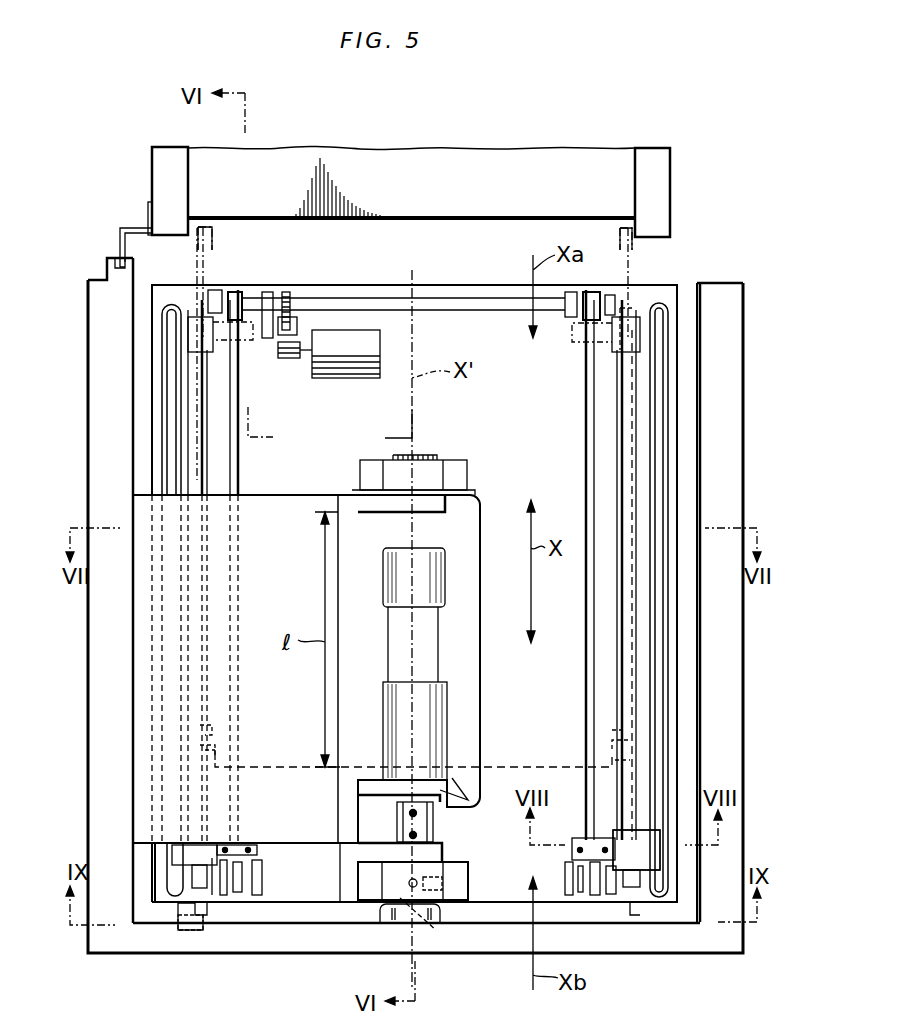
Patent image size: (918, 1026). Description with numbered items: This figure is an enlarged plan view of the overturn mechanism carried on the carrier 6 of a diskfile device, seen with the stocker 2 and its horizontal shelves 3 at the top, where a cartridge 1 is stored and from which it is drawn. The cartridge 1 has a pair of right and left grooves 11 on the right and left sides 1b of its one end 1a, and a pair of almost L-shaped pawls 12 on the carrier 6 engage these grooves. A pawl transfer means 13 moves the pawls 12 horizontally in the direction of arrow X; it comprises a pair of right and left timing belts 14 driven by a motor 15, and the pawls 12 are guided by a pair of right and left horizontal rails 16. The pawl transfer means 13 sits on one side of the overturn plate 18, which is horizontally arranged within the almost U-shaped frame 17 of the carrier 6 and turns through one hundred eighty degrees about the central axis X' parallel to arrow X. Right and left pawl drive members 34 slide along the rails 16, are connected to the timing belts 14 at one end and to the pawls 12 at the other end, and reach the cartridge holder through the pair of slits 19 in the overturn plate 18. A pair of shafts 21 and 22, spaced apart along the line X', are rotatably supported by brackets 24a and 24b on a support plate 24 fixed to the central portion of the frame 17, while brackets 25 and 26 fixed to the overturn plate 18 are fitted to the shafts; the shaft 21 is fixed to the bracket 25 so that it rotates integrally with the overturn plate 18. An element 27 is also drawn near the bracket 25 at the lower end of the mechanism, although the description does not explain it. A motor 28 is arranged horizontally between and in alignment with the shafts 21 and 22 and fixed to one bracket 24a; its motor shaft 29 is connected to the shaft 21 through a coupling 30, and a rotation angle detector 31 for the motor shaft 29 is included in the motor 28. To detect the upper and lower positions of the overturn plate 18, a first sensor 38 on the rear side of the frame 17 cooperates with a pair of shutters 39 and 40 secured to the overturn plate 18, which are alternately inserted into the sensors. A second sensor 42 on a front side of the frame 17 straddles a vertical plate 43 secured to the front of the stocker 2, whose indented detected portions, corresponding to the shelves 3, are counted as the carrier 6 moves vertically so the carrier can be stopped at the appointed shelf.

The cartridge 1 is at (197, 385).
The one end of the cartridge 1a is at (303, 773).
The right and left sides of the cartridge end 1b is at (204, 587).
The stocker 2 is at (660, 175).
The shelves 3 is at (465, 155).
The carrier 6 is at (748, 300).
The grooves 11 is at (197, 752).
The pawls 12 is at (218, 232).
The pawl transfer means 13 is at (112, 935).
The timing belts 14 is at (237, 387).
The motor 15 is at (357, 355).
The horizontal rails 16 is at (197, 415).
The frame 17 is at (722, 496).
The overturn plate 18 is at (300, 888).
The slits 19 is at (165, 460).
The shaft 21 is at (418, 890).
The shaft 22 is at (423, 483).
The support plate 24 is at (245, 660).
The brackets 24a is at (440, 853).
The brackets 24b is at (438, 502).
The bracket 25 is at (378, 897).
The bracket 26 is at (388, 468).
The lever 27 is at (440, 880).
The motor 28 is at (432, 725).
The motor shaft 29 is at (452, 785).
The coupling 30 is at (400, 823).
The rotation angle detector 31 is at (437, 578).
The pawl drive members 34 is at (190, 330).
The first sensor 38 is at (175, 915).
The shutter 39 is at (205, 910).
The shutter 40 is at (645, 860).
The second sensor 42 is at (110, 270).
The vertical plate 43 is at (118, 232).